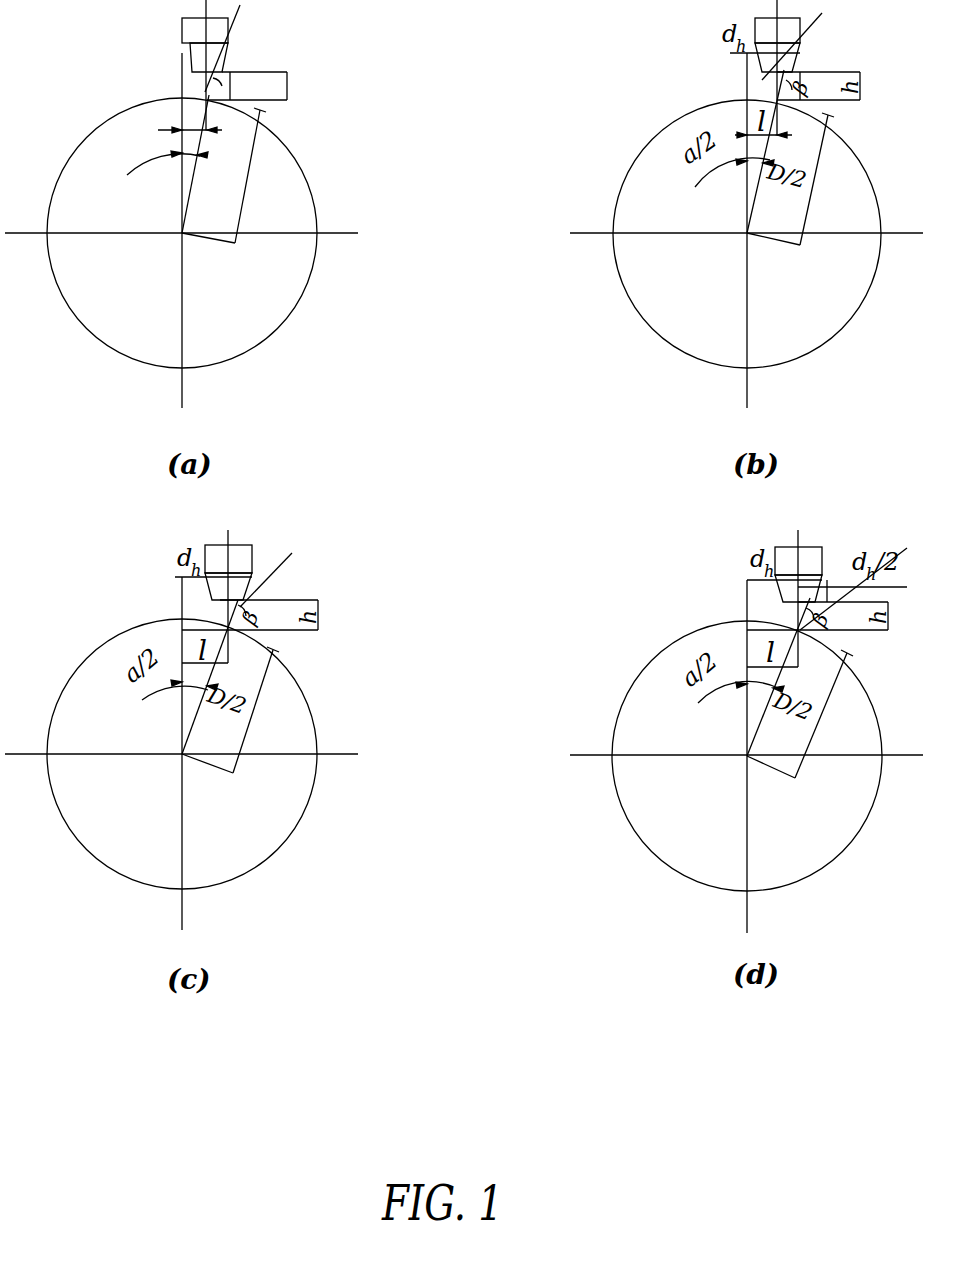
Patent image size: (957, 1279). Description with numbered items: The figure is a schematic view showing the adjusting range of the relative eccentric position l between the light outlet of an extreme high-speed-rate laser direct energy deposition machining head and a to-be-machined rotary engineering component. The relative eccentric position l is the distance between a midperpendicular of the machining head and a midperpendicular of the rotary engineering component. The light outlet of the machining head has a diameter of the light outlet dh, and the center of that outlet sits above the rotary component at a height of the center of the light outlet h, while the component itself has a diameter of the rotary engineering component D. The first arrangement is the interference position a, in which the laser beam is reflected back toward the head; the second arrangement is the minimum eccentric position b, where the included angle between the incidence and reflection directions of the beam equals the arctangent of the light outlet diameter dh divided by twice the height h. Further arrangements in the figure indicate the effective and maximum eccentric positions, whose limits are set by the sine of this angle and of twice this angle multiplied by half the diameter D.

The diameter of the light outlet dh is at (217, 53).
The height of the center of the light outlet h is at (249, 86).
The relative eccentric position l is at (190, 116).
The interference position a is at (156, 146).
The diameter of the rotary engineering component D is at (224, 175).
The minimum eccentric position b is at (229, 87).